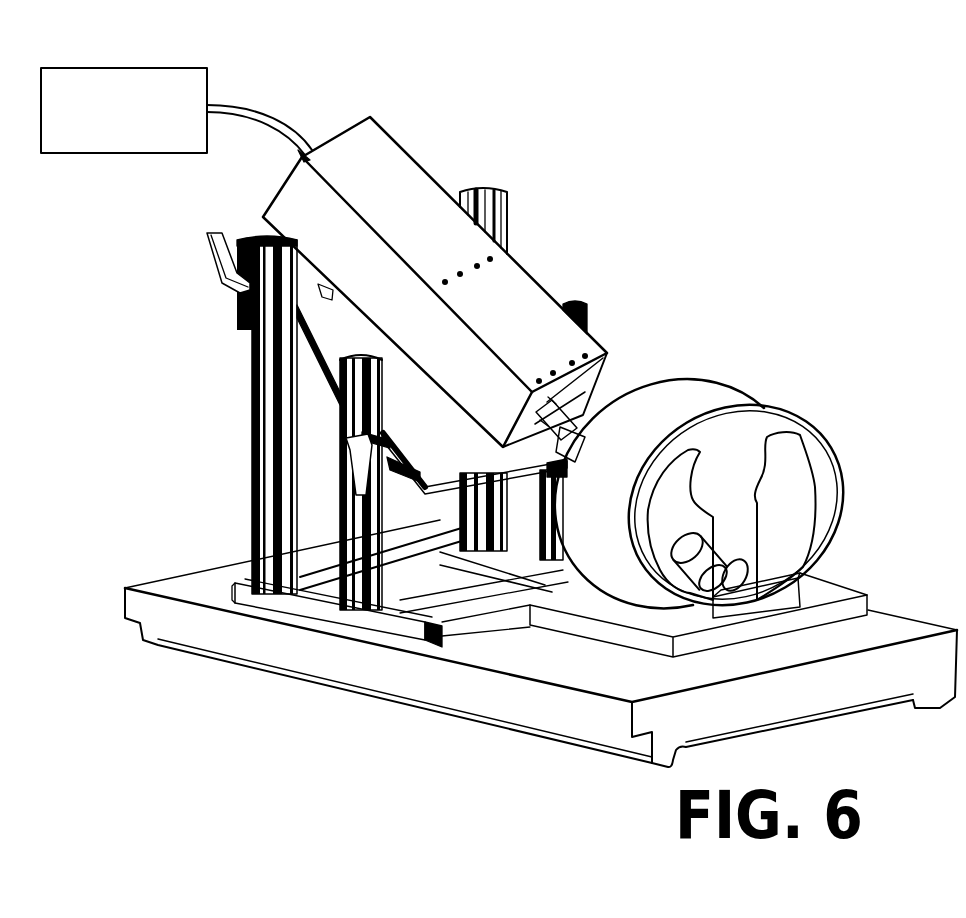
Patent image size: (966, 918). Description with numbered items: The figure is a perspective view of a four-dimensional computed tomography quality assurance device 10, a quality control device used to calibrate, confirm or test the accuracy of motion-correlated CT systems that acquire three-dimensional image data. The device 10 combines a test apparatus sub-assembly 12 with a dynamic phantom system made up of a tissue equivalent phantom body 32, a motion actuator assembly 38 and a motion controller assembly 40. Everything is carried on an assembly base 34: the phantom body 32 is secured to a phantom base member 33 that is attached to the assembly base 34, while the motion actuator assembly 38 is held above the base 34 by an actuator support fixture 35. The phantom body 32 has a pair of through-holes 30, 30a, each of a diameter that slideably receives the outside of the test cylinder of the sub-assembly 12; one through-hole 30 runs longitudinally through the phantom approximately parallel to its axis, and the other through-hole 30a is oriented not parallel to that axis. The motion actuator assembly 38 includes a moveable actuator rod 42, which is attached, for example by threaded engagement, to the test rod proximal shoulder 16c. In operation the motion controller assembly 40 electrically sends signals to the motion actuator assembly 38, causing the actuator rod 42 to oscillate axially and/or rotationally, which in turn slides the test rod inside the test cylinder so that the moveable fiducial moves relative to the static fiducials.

The four-dimensional computed tomography quality assurance device 10 is at (626, 184).
The test apparatus sub-assembly 12 is at (705, 565).
The test rod proximal shoulder 16c is at (572, 440).
The through-hole 30 is at (678, 567).
The through-hole 30a is at (746, 575).
The tissue equivalent phantom body 32 is at (697, 388).
The phantom base member 33 is at (858, 607).
The assembly base 34 is at (506, 702).
The actuator support fixture 35 is at (256, 451).
The motion actuator assembly 38 is at (385, 147).
The motion controller assembly 40 is at (118, 72).
The moveable actuator rod 42 is at (593, 357).